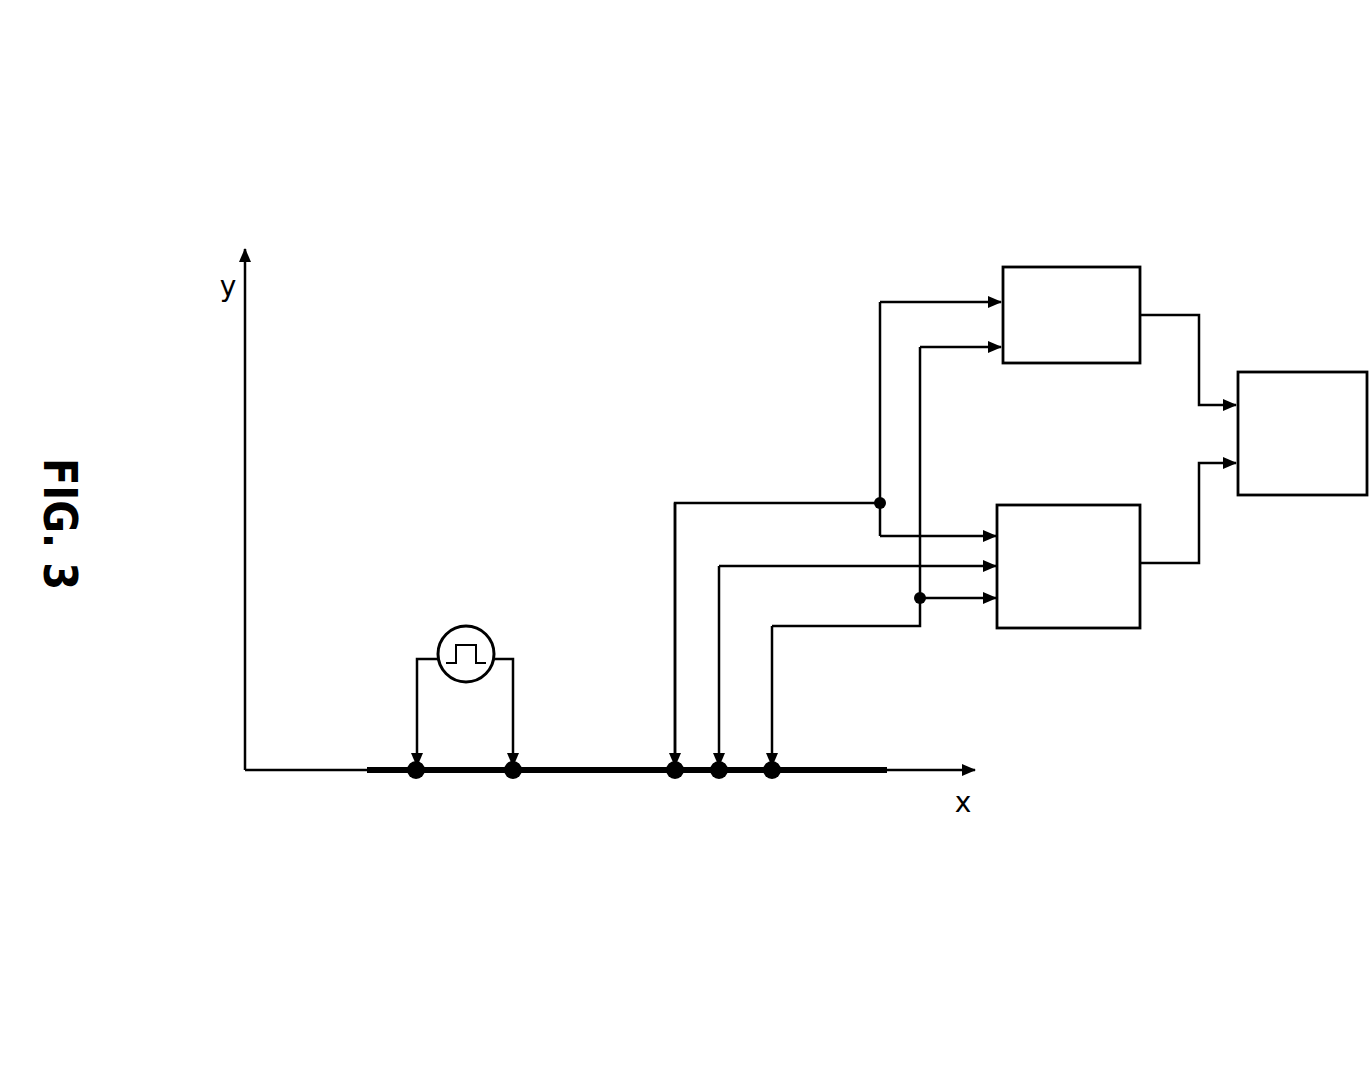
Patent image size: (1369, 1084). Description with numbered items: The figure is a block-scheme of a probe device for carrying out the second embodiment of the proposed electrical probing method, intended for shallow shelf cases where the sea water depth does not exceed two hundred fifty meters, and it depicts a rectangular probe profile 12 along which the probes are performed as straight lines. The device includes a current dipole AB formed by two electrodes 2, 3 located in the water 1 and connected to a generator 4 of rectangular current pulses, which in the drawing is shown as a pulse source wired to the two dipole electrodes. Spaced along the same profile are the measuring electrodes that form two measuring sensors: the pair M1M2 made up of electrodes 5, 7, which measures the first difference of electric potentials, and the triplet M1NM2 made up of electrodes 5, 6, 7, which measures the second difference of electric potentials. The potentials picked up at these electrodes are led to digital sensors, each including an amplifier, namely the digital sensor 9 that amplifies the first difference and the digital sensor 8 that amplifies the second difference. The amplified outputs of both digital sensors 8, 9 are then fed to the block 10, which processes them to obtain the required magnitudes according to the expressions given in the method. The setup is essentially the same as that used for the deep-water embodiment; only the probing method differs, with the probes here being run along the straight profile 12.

The water 1 is at (463, 778).
The current dipole electrode A 2 is at (510, 780).
The current dipole electrode B 3 is at (413, 780).
The generator of rectangular current pulses 4 is at (463, 624).
The measuring sensor electrode M1 5 is at (672, 780).
The measuring sensor electrode N 6 is at (718, 780).
The measuring sensor electrode M2 7 is at (770, 780).
The digital sensor 8 is at (1118, 504).
The digital sensor 9 is at (1055, 266).
The processing block 10 is at (1288, 371).
The rectangular probe profile 12 is at (866, 778).